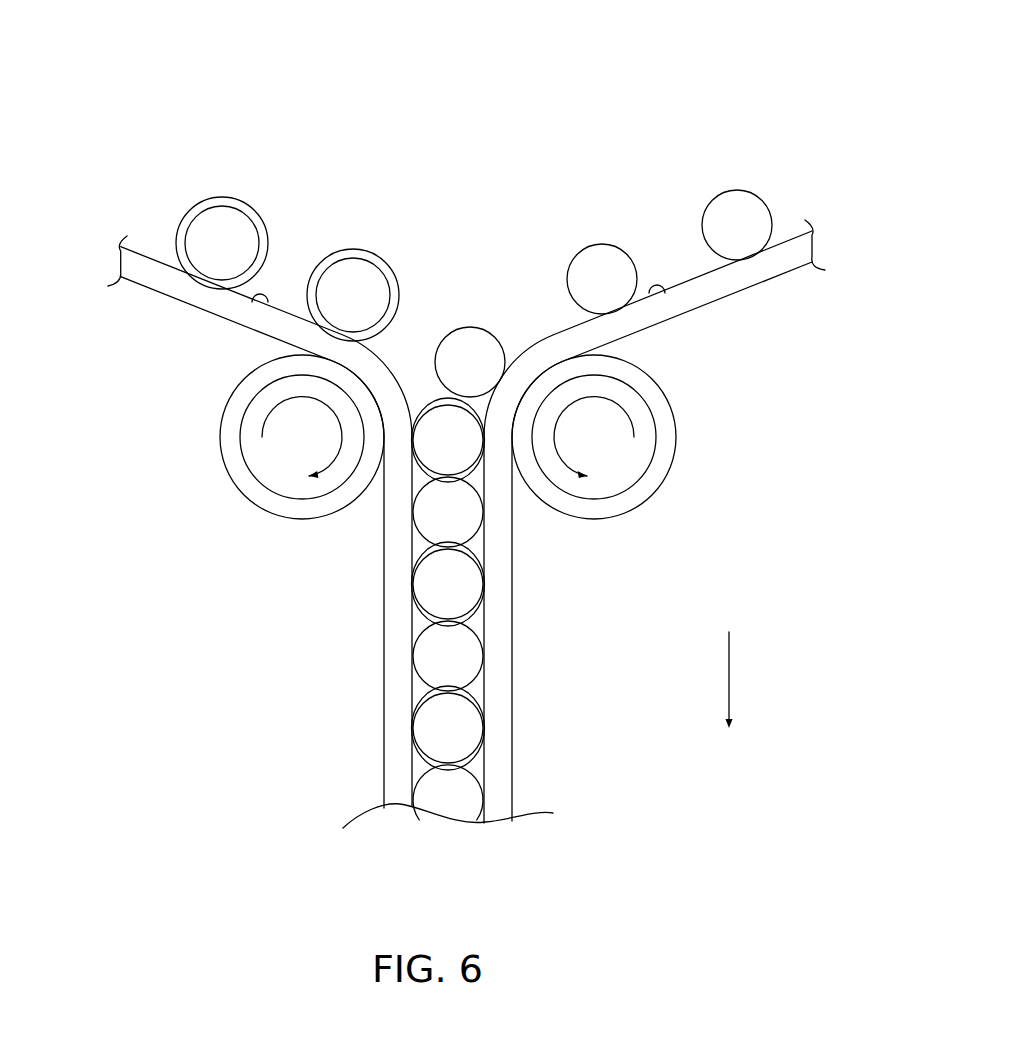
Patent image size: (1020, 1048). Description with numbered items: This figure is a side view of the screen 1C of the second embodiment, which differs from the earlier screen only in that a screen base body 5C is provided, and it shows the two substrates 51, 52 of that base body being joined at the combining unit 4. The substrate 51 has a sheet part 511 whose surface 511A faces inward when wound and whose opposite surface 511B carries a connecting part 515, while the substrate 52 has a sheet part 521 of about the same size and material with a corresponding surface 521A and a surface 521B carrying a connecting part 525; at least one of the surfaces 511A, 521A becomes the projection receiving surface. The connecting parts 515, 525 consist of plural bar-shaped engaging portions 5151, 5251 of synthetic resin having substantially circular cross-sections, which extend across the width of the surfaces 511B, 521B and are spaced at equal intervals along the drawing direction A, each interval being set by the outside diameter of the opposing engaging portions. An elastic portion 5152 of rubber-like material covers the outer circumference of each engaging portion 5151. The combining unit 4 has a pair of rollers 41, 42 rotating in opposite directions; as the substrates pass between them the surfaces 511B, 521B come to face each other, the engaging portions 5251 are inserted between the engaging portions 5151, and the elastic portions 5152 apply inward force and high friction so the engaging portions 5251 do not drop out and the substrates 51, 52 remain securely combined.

The screen 1C is at (748, 106).
The substrate 51 is at (145, 152).
The substrate 52 is at (752, 165).
The sheet part 511 is at (210, 305).
The surface 511A is at (160, 293).
The surface 511B is at (247, 297).
The connecting part 515 is at (339, 136).
The engaging portion 5151 is at (357, 277).
The elastic portion 5152 is at (224, 203).
The sheet part 521 is at (725, 287).
The surface 521A is at (768, 280).
The surface 521B is at (667, 289).
The connecting part 525 is at (556, 152).
The engaging portion 5251 is at (722, 205).
The combining unit 4 is at (457, 437).
The roller 41 is at (219, 440).
The roller 42 is at (677, 440).
The screen base body 5C is at (615, 606).
The drawing direction A is at (731, 678).